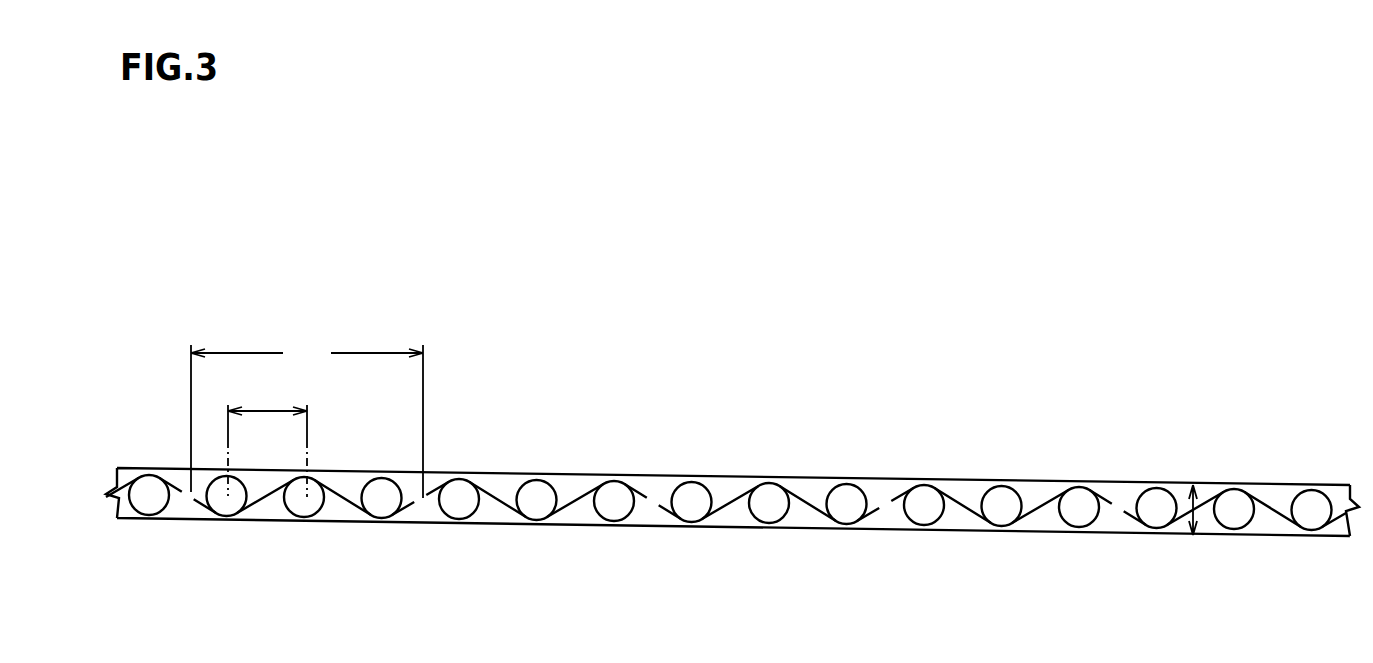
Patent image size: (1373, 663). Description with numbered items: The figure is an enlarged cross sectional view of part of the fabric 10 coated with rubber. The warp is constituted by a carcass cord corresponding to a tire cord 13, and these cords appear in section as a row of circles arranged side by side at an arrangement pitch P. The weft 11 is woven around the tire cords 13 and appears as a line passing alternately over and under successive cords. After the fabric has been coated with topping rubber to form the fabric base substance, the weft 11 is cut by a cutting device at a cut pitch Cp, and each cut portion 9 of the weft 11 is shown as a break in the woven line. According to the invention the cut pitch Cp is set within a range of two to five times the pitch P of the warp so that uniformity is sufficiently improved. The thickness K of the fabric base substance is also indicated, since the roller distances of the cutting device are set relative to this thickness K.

The cut portion 9 is at (195, 519).
The fabric coated with rubber 10 is at (143, 443).
The weft 11 is at (728, 503).
The tire cord 13 is at (923, 500).
The cut pitch Cp is at (307, 418).
The pitch of the warp P is at (267, 437).
The thickness of the fabric base substance K is at (1191, 503).